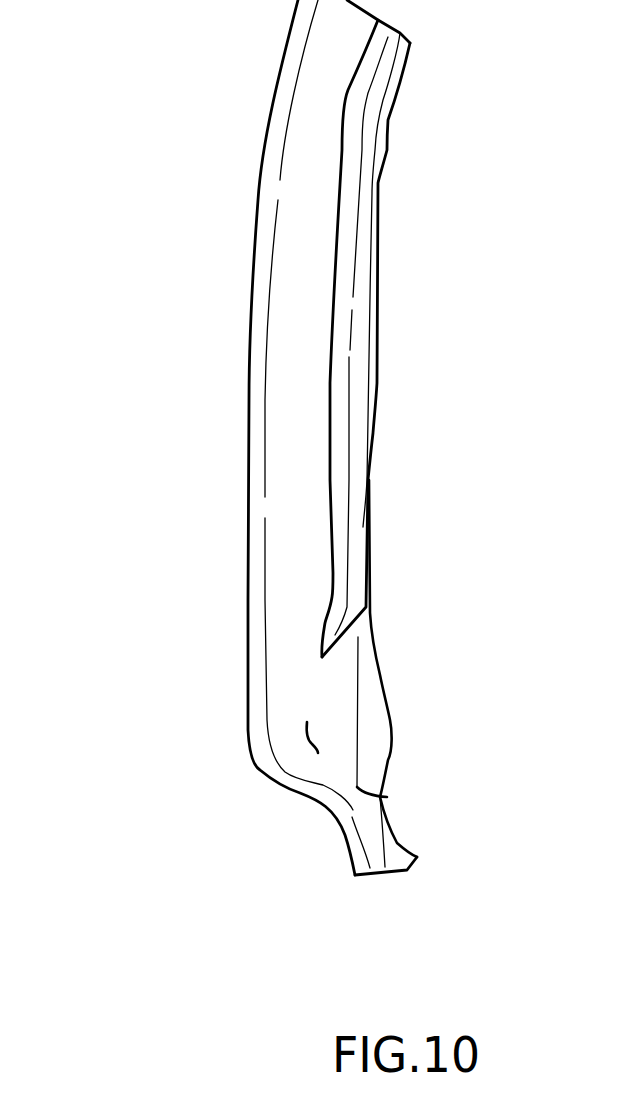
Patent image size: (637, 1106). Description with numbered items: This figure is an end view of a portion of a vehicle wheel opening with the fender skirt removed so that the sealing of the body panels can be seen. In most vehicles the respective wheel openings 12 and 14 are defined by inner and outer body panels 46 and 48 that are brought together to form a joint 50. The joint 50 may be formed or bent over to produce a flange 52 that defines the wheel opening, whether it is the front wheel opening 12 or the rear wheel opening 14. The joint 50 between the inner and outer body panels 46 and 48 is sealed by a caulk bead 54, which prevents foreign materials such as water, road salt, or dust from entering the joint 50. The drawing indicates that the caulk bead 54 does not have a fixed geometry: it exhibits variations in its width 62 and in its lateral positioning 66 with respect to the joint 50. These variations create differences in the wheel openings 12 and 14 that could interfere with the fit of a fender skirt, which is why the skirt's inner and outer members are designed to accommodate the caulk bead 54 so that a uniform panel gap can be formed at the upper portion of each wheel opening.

The front wheel opening 12 is at (270, 437).
The rear wheel opening 14 is at (270, 437).
The inner body panel 46 is at (390, 737).
The outer body panel 48 is at (248, 720).
The joint 50 is at (387, 797).
The flange 52 is at (308, 740).
The caulk bead 54 is at (333, 573).
The width 62 is at (283, 397).
The lateral positioning 66 is at (288, 678).